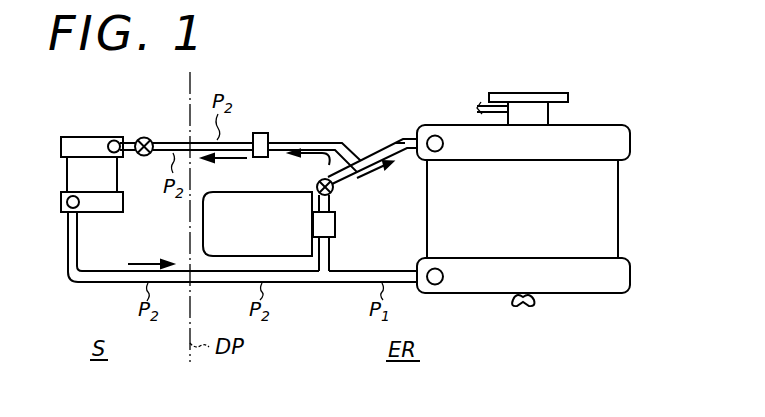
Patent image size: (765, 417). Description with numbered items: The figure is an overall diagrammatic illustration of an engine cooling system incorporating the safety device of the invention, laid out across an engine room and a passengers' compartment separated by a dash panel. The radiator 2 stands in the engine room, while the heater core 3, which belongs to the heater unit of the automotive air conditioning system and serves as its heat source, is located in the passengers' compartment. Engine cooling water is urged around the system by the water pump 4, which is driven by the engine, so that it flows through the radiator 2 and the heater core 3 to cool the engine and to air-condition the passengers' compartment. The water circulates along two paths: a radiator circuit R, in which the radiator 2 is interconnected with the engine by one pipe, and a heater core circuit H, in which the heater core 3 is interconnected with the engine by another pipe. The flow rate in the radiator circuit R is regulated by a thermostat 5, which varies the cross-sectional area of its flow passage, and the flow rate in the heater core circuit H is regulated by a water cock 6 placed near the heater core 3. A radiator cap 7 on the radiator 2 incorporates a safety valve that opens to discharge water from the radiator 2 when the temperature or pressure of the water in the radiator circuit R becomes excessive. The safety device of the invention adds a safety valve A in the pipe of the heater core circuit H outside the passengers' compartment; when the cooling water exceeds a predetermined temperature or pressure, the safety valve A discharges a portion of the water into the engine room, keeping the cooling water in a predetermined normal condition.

The radiator 2 is at (612, 205).
The heater core 3 is at (67, 174).
The water pump 4 is at (337, 223).
The thermostat 5 is at (336, 191).
The water cock 6 is at (144, 136).
The radiator cap 7 is at (527, 93).
The safety valve A is at (261, 132).
The heater core circuit H is at (309, 124).
The radiator circuit R is at (400, 124).